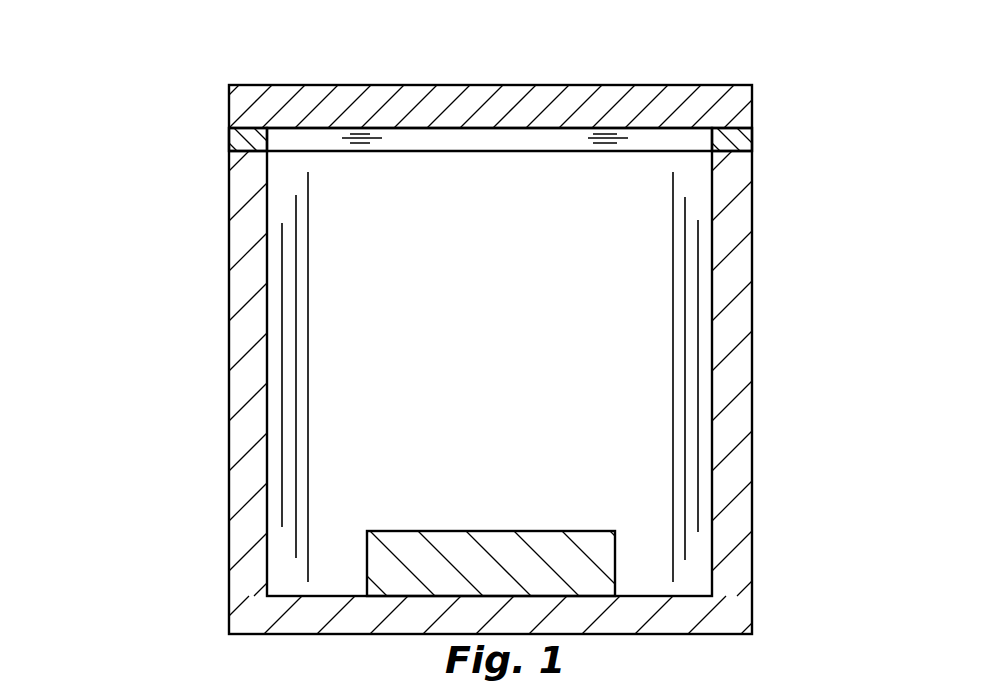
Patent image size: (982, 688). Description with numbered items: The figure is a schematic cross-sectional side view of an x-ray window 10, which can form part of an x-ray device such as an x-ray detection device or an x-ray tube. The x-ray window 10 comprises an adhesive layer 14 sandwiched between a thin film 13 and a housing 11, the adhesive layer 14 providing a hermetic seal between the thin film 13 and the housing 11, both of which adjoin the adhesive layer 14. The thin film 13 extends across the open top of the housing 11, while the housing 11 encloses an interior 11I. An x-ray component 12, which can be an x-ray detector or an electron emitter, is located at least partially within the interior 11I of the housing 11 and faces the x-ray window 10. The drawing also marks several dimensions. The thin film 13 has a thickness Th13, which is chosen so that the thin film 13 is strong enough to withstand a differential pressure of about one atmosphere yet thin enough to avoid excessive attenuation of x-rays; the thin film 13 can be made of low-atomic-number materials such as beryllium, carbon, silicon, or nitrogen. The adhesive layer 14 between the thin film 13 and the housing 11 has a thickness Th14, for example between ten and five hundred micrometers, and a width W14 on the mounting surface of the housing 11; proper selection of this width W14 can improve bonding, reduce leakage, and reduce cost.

The x-ray window 10 is at (132, 140).
The housing 11 is at (496, 622).
The interior of the housing 11I is at (490, 377).
The x-ray component 12 is at (496, 572).
The thin film 13 is at (498, 119).
The adhesive layer 14 is at (237, 142).
The thickness of the thin film Th13 is at (558, 158).
The thickness of the adhesive layer Th14 is at (420, 97).
The width of the adhesive layer W14 is at (680, 140).